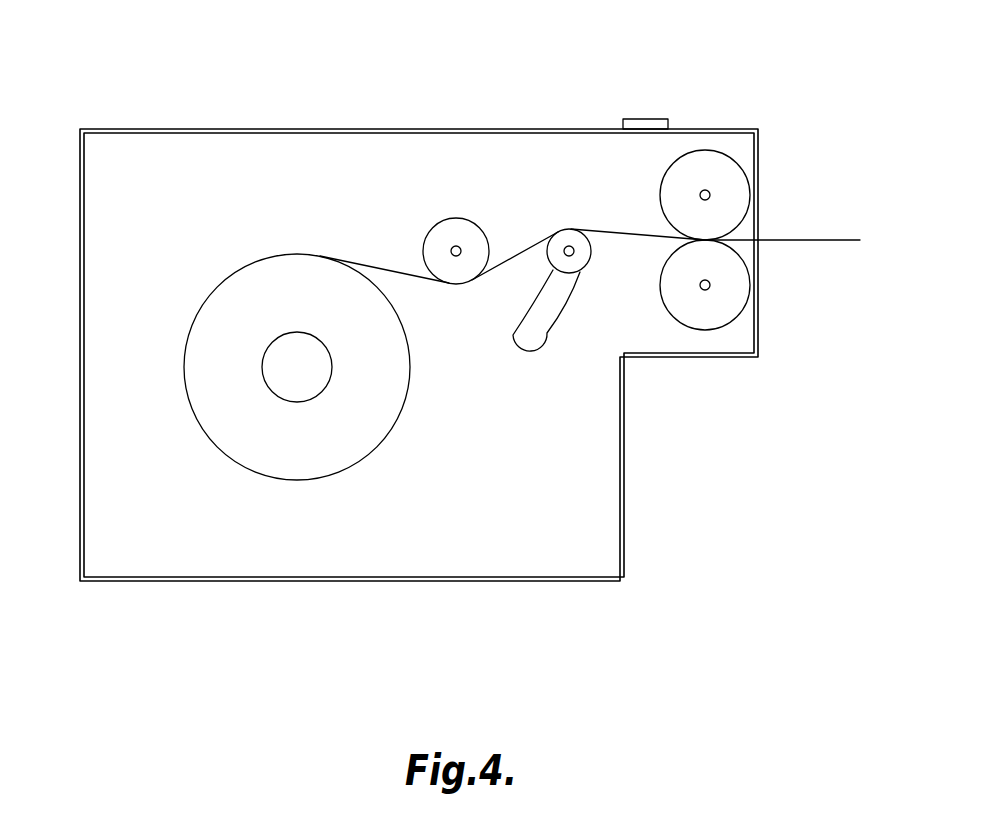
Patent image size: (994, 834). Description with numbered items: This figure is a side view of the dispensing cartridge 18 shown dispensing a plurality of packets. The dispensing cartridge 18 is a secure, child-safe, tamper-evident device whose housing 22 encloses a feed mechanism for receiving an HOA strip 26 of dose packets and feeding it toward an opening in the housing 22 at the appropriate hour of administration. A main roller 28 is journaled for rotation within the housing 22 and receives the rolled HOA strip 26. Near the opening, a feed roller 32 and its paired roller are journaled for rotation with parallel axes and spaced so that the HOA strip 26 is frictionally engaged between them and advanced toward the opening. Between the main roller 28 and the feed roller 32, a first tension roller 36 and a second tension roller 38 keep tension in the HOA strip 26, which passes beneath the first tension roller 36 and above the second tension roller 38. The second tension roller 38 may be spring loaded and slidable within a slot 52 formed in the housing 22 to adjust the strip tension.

The dispensing cartridge 18 is at (228, 108).
The housing 22 is at (615, 130).
The HOA strip 26 is at (628, 233).
The main roller 28 is at (290, 383).
The feed roller 32 is at (733, 152).
The first tension roller 36 is at (453, 233).
The second tension roller 38 is at (572, 238).
The slot 52 is at (545, 335).